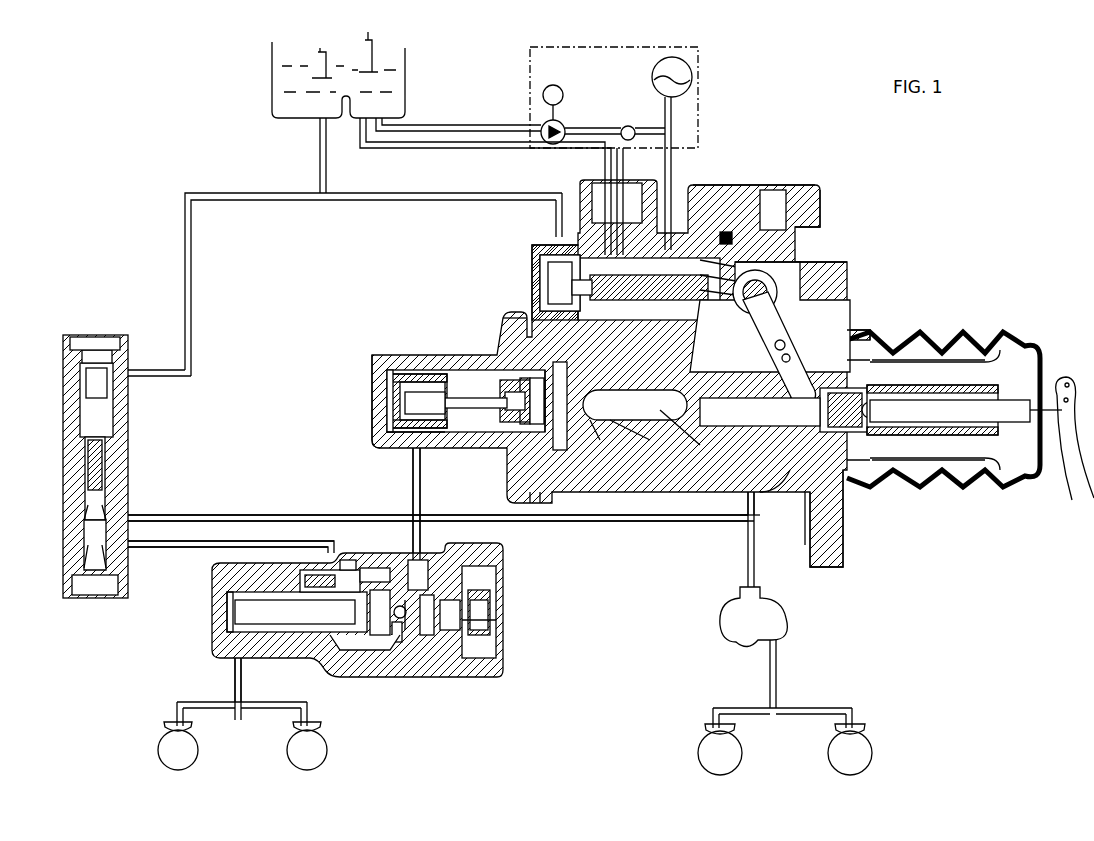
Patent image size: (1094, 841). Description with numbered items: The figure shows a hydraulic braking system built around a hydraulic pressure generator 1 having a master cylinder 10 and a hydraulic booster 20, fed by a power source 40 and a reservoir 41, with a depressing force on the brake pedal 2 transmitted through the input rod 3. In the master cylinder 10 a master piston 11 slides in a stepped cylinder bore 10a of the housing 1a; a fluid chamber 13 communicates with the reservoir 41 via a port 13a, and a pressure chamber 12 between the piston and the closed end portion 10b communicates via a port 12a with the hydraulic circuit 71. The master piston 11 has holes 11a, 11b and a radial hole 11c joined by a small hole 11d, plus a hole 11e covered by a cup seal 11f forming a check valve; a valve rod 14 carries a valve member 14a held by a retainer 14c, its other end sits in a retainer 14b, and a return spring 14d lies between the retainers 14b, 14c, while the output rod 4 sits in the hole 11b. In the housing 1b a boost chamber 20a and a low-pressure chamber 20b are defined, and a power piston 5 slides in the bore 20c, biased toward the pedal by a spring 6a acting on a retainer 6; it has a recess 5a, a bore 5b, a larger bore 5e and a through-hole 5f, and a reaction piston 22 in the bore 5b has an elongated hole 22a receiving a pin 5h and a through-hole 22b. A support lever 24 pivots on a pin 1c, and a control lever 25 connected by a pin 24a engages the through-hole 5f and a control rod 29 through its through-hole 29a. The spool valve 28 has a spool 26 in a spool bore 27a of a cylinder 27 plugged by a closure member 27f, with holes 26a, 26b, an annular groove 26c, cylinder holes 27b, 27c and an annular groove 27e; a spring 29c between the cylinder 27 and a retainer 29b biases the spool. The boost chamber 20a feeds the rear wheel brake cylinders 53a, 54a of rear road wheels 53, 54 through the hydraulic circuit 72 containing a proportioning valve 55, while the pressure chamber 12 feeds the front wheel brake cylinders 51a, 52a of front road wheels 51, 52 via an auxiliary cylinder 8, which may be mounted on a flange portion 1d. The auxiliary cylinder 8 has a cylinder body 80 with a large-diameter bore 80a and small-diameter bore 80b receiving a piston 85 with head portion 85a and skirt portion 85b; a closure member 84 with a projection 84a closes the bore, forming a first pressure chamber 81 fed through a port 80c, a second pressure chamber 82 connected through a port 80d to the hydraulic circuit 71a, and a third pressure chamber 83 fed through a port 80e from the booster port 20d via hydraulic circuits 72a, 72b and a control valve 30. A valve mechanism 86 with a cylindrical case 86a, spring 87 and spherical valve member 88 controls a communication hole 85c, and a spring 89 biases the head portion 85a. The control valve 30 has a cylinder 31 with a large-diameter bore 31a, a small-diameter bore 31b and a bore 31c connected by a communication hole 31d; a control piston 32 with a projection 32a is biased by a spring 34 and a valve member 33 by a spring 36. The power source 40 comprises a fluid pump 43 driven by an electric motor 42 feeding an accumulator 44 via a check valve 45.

The hydraulic pressure generator 1 is at (945, 322).
The housing 1a is at (372, 355).
The housing 1b is at (810, 192).
The pin 1c is at (808, 290).
The flange portion 1d is at (843, 555).
The brake pedal 2 is at (1080, 505).
The input rod 3 is at (1015, 423).
The output rod 4 is at (735, 300).
The power piston 5 is at (765, 338).
The recess 5a is at (690, 445).
The bore 5b is at (775, 345).
The bore 5e is at (930, 462).
The through-hole 5f is at (850, 478).
The pin 5h is at (780, 480).
The retainer 6 is at (998, 462).
The spring 6a is at (955, 436).
The auxiliary cylinder 8 is at (505, 560).
The master cylinder 10 is at (410, 330).
The cylinder bore 10a is at (392, 372).
The closed end portion 10b is at (395, 440).
The master piston 11 is at (560, 450).
The hole 11a is at (535, 424).
The hole 11b is at (596, 440).
The hole 11c is at (604, 392).
The small hole 11d is at (533, 503).
The hole 11e is at (540, 368).
The cup seal 11f is at (520, 368).
The pressure chamber 12 is at (460, 408).
The port 12a is at (418, 432).
The fluid chamber 13 is at (548, 308).
The port 13a is at (555, 240).
The valve rod 14 is at (445, 428).
The valve member 14a is at (510, 422).
The retainer 14b is at (412, 374).
The retainer 14c is at (522, 378).
The return spring 14d is at (450, 372).
The hydraulic booster 20 is at (825, 198).
The boost chamber 20a is at (852, 300).
The low-pressure chamber 20b is at (640, 440).
The bore 20c is at (745, 512).
The port 20d is at (750, 518).
The reaction piston 22 is at (740, 426).
The elongated hole 22a is at (805, 500).
The through-hole 22b is at (808, 545).
The support lever 24 is at (845, 390).
The pin 24a is at (866, 400).
The control lever 25 is at (872, 333).
The spool 26 is at (600, 270).
The hole 26a is at (715, 262).
The hole 26b is at (708, 277).
The annular groove 26c is at (700, 292).
The cylinder 27 is at (552, 250).
The spool bore 27a is at (542, 268).
The hole 27b is at (608, 200).
The hole 27c is at (640, 250).
The annular groove 27e is at (672, 250).
The closure member 27f is at (552, 280).
The spool valve 28 is at (572, 287).
The control rod 29 is at (778, 282).
The through-hole 29a is at (770, 268).
The retainer 29b is at (775, 192).
The spring 29c is at (728, 235).
The control valve 30 is at (63, 418).
The cylinder 31 is at (120, 430).
The large-diameter bore 31a is at (113, 412).
The small-diameter bore 31b is at (108, 470).
The bore 31c is at (106, 555).
The communication hole 31d is at (130, 520).
The control piston 32 is at (88, 482).
The projection 32a is at (86, 512).
The valve member 33 is at (88, 542).
The spring 34 is at (86, 385).
The spring 36 is at (72, 585).
The power source 40 is at (695, 72).
The reservoir 41 is at (290, 120).
The electric motor 42 is at (553, 85).
The fluid pump 43 is at (565, 124).
The accumulator 44 is at (652, 74).
The check valve 45 is at (627, 125).
The front road wheel 51 is at (198, 748).
The wheel brake cylinder 51a is at (185, 728).
The front road wheel 52 is at (327, 748).
The wheel brake cylinder 52a is at (318, 728).
The rear road wheel 53 is at (742, 752).
The wheel brake cylinder 53a is at (736, 728).
The rear road wheel 54 is at (872, 752).
The wheel brake cylinder 54a is at (866, 728).
The proportioning valve 55 is at (790, 620).
The hydraulic circuit 71 is at (421, 470).
The hydraulic circuit 71a is at (243, 705).
The hydraulic circuit 72 is at (755, 570).
The hydraulic circuit 72a is at (632, 523).
The hydraulic circuit 72b is at (222, 521).
The cylinder body 80 is at (470, 552).
The large-diameter bore 80a is at (320, 572).
The small-diameter bore 80b is at (252, 548).
The port 80c is at (413, 556).
The port 80d is at (236, 668).
The port 80e is at (345, 560).
The first pressure chamber 81 is at (422, 560).
The second pressure chamber 82 is at (278, 590).
The third pressure chamber 83 is at (335, 575).
The closure member 84 is at (495, 648).
The projection 84a is at (496, 624).
The piston 85 is at (395, 620).
The head portion 85a is at (395, 640).
The skirt portion 85b is at (345, 652).
The communication hole 85c is at (455, 630).
The valve mechanism 86 is at (380, 640).
The cylindrical case 86a is at (405, 632).
The spring 87 is at (372, 568).
The valve member 88 is at (428, 635).
The spring 89 is at (228, 600).